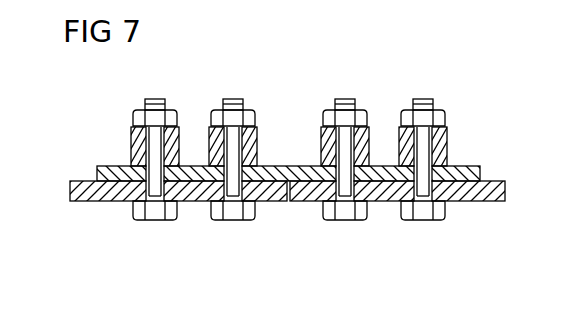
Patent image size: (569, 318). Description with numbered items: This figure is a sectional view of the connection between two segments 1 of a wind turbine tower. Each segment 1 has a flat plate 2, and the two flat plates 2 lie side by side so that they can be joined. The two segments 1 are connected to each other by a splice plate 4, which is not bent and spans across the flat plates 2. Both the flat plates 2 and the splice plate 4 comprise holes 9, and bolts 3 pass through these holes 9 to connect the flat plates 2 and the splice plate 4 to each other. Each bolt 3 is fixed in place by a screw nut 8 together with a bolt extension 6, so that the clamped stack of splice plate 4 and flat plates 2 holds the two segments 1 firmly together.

The segment 1 is at (287, 229).
The flat plate 2 is at (187, 195).
The bolt 3 is at (232, 212).
The splice plate 4 is at (121, 166).
The bolt extension 6 is at (250, 150).
The screw nut 8 is at (212, 112).
The hole 9 is at (446, 173).